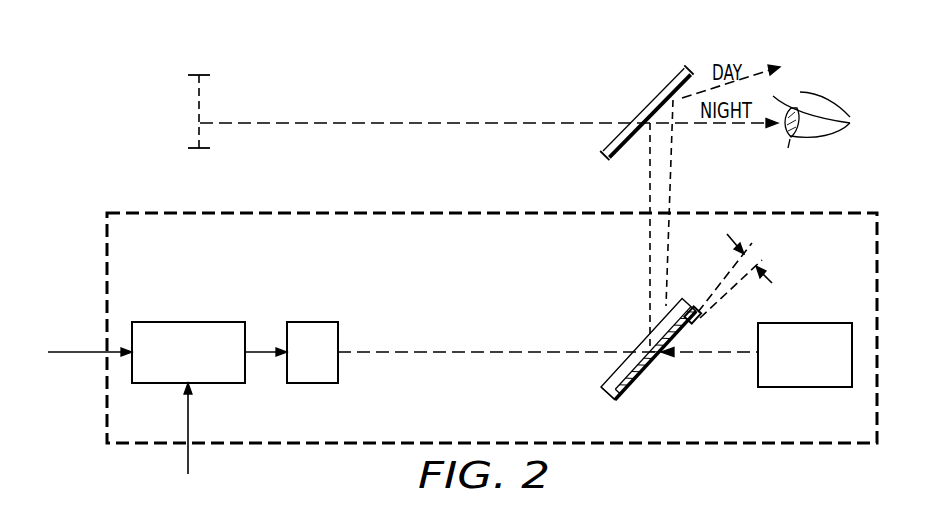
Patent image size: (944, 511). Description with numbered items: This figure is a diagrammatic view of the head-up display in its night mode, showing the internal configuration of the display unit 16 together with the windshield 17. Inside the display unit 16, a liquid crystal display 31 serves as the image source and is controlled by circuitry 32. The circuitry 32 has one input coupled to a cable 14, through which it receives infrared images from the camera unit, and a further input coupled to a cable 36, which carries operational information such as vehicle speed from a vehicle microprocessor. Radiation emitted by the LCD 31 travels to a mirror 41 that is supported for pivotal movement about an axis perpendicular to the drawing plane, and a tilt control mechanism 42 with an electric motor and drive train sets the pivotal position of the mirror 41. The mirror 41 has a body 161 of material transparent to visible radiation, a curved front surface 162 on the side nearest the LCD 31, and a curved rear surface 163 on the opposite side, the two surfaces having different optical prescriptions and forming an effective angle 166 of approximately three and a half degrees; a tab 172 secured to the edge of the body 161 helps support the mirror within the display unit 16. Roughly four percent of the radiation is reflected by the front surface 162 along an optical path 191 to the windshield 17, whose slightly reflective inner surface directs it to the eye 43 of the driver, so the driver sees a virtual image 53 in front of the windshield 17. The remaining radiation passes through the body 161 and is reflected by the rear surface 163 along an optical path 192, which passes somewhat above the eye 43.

The virtual image 53 is at (197, 100).
The windshield 17 is at (648, 106).
The optical path 191 is at (649, 180).
The optical path 192 is at (674, 178).
The eye 43 is at (820, 140).
The display unit 16 is at (405, 212).
The cable 14 is at (81, 350).
The circuitry 32 is at (187, 321).
The liquid crystal display 31 is at (312, 321).
The cable 36 is at (189, 462).
The tilt control mechanism 42 is at (805, 388).
The mirror 41 is at (666, 333).
The front surface 162 is at (599, 388).
The rear surface 163 is at (630, 388).
The body 161 is at (652, 356).
The tab 172 is at (695, 303).
The effective angle 166 is at (752, 262).